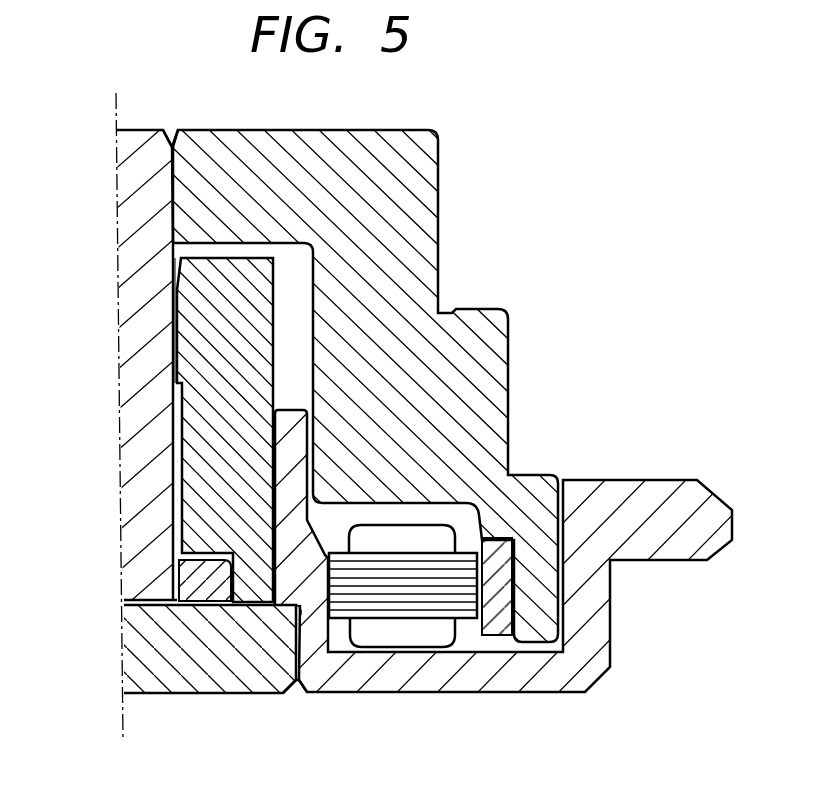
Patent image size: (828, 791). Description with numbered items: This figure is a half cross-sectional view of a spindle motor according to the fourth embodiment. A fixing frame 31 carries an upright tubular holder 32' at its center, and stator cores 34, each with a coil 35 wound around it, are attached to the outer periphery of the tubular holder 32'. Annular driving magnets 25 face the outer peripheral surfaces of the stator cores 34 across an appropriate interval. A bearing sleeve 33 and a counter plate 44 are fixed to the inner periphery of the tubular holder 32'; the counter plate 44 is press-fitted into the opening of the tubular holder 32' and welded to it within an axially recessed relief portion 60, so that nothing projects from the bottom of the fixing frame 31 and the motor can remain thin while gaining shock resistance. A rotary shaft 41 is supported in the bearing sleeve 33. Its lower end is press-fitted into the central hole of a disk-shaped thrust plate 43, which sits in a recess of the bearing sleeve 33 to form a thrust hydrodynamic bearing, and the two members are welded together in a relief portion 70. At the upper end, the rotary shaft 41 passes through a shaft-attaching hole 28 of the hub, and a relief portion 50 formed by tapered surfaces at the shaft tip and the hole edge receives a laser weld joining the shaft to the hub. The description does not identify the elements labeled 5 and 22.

The gap / clearance 5 is at (176, 406).
The housing body 22 is at (420, 183).
The driving magnet 25 is at (498, 617).
The shaft-attaching hole 28 is at (172, 198).
The fixing frame 31 is at (600, 630).
The tubular holder 32' is at (503, 395).
The bearing sleeve 33 is at (205, 333).
The stator core 34 is at (404, 587).
The coil 35 is at (423, 538).
The rotary shaft 41 is at (128, 197).
The thrust plate 43 is at (195, 572).
The counter plate 44 is at (205, 665).
The relief portion 50 is at (170, 126).
The relief portion 60 is at (292, 703).
The relief portion 70 is at (175, 607).